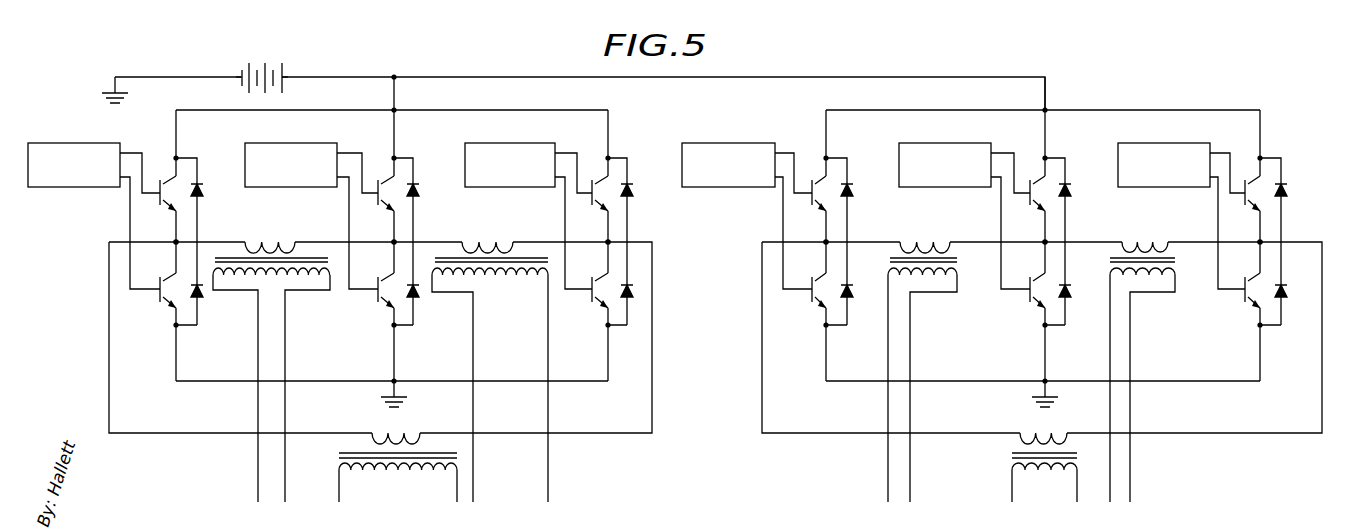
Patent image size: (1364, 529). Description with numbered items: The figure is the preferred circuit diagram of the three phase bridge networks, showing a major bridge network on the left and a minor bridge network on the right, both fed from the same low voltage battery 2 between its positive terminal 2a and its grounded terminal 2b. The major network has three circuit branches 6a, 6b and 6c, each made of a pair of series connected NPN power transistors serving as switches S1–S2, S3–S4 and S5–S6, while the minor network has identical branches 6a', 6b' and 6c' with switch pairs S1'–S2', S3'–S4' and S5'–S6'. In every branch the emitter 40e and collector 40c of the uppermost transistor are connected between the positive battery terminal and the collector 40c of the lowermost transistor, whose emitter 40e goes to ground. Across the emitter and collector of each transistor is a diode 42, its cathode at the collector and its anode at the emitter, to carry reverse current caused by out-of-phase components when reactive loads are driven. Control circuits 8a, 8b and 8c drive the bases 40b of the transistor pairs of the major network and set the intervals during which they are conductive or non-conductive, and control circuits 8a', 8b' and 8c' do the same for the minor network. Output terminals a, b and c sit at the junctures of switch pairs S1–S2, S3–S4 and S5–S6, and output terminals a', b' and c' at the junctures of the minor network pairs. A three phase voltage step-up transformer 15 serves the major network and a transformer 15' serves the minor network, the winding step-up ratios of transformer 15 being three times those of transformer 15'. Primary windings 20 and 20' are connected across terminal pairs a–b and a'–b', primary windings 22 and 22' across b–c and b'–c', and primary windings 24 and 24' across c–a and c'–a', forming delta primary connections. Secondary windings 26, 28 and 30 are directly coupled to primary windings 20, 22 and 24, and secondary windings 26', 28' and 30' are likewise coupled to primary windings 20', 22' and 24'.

The battery 2 is at (252, 58).
The positive terminal of the battery 2a is at (285, 76).
The grounded terminal of the battery 2b is at (240, 76).
The control circuit 8a is at (94, 201).
The control circuit 8b is at (311, 201).
The control circuit 8c is at (528, 201).
The control circuit 8a' is at (747, 201).
The control circuit 8b' is at (964, 201).
The control circuit 8c' is at (1181, 201).
The circuit branch 6a is at (196, 245).
The circuit branch 6b is at (418, 229).
The circuit branch 6c is at (633, 245).
The circuit branch 6a' is at (856, 245).
The circuit branch 6b' is at (1070, 229).
The circuit branch 6c' is at (1287, 245).
The switch S1 is at (149, 162).
The switch S2 is at (144, 324).
The switch S3 is at (368, 162).
The switch S4 is at (363, 321).
The switch S5 is at (582, 162).
The switch S6 is at (586, 321).
The switch S1' is at (802, 160).
The switch S2' is at (797, 324).
The switch S3' is at (1020, 160).
The switch S4' is at (1013, 320).
The switch S5' is at (1232, 160).
The switch S6' is at (1230, 321).
The collector 40c is at (172, 180).
The base 40b is at (162, 203).
The emitter 40e is at (176, 214).
The diode 42 is at (203, 190).
The output terminal a is at (181, 241).
The output terminal b is at (400, 241).
The output terminal c is at (613, 241).
The output terminal a' is at (834, 241).
The output terminal b' is at (1053, 241).
The output terminal c' is at (1267, 241).
The three phase voltage step-up transformer 15 is at (278, 232).
The three phase voltage step-up transformer 15' is at (920, 231).
The primary winding 20 is at (270, 228).
The primary winding 20' is at (932, 232).
The primary winding 22 is at (487, 227).
The primary winding 22' is at (1145, 232).
The primary winding 24 is at (408, 422).
The primary winding 24' is at (1060, 421).
The secondary winding 26 is at (271, 385).
The secondary winding 26' is at (922, 385).
The secondary winding 28 is at (490, 380).
The secondary winding 28' is at (1142, 380).
The secondary winding 30 is at (398, 479).
The secondary winding 30' is at (1044, 479).